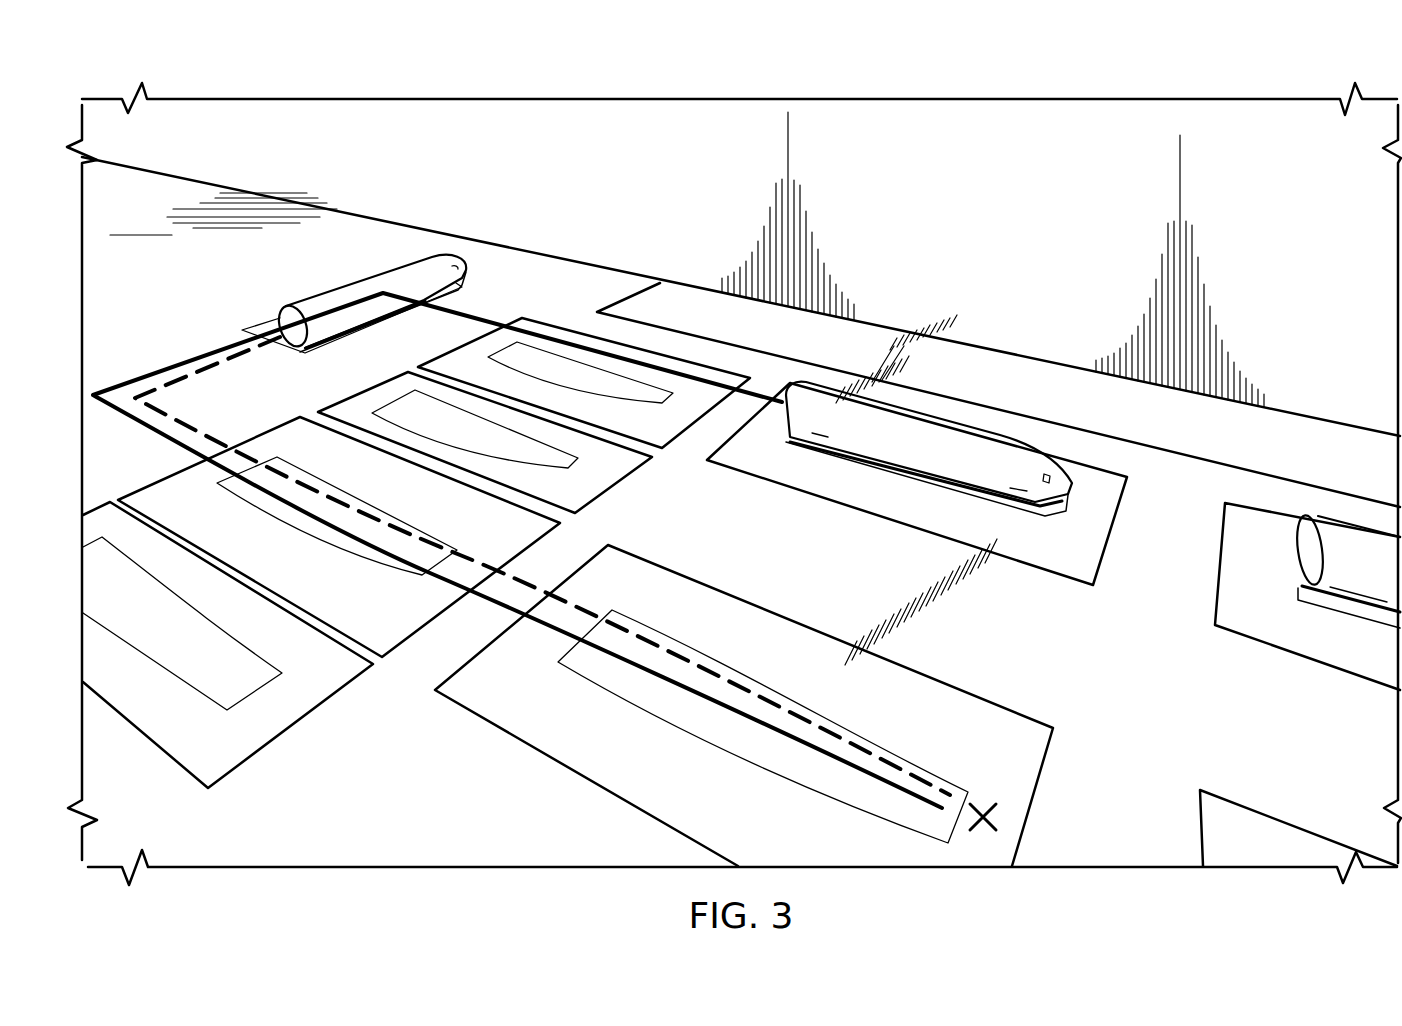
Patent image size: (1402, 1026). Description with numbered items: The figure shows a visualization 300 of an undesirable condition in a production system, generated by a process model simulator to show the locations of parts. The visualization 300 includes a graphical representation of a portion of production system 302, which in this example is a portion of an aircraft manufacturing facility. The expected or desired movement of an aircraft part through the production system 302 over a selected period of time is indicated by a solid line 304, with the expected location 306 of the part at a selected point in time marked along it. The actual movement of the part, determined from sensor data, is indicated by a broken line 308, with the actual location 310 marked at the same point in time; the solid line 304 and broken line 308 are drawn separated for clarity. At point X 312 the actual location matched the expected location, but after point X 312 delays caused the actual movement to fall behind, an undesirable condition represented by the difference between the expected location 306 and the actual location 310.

The visualization 300 is at (437, 77).
The portion of production system 302 is at (544, 771).
The solid line 304 is at (553, 622).
The expected location 306 is at (960, 423).
The broken line 308 is at (668, 660).
The actual location 310 is at (343, 278).
The point X 312 is at (983, 805).